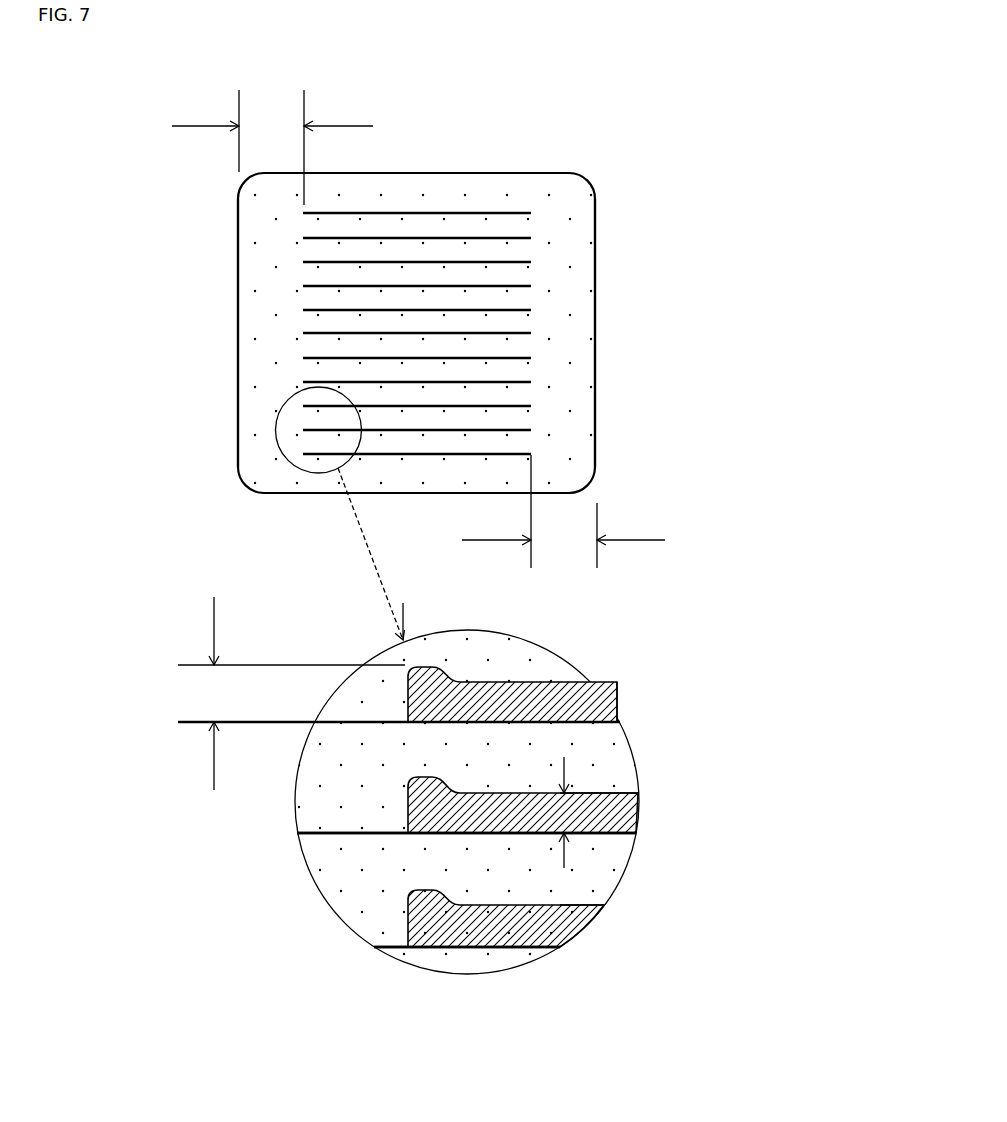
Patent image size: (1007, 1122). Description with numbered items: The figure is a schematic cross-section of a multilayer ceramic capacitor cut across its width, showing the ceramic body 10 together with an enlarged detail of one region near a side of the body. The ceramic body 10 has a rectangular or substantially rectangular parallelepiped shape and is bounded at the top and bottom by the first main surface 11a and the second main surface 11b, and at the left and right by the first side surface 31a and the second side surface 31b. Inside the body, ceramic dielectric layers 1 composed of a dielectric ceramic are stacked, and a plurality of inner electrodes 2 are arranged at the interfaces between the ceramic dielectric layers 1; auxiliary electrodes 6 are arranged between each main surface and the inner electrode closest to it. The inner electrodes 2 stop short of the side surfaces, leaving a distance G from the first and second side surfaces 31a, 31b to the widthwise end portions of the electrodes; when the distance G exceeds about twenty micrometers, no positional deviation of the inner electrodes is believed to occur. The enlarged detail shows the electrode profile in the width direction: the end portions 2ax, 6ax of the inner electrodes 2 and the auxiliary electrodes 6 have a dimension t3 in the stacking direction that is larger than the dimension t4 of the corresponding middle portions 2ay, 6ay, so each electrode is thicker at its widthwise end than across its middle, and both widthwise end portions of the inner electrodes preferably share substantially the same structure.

The ceramic body 10 is at (532, 150).
The first main surface 11a is at (484, 173).
The second main surface 11b is at (303, 497).
The ceramic dielectric layer 1 is at (438, 277).
The inner electrode 2 is at (504, 307).
The first side surface 31a is at (238, 338).
The second side surface 31b is at (595, 340).
The distance G is at (418, 329).
The end portion of inner electrode 2ax is at (442, 665).
The end portion of auxiliary electrode 6ax is at (433, 777).
The middle portion of inner electrode 2ay is at (610, 704).
The middle portion of auxiliary electrode 6ay is at (600, 792).
The auxiliary electrode 6 is at (595, 835).
The dimension in the stacking direction of end portion t3 is at (291, 693).
The dimension in the stacking direction of middle portion t4 is at (570, 815).